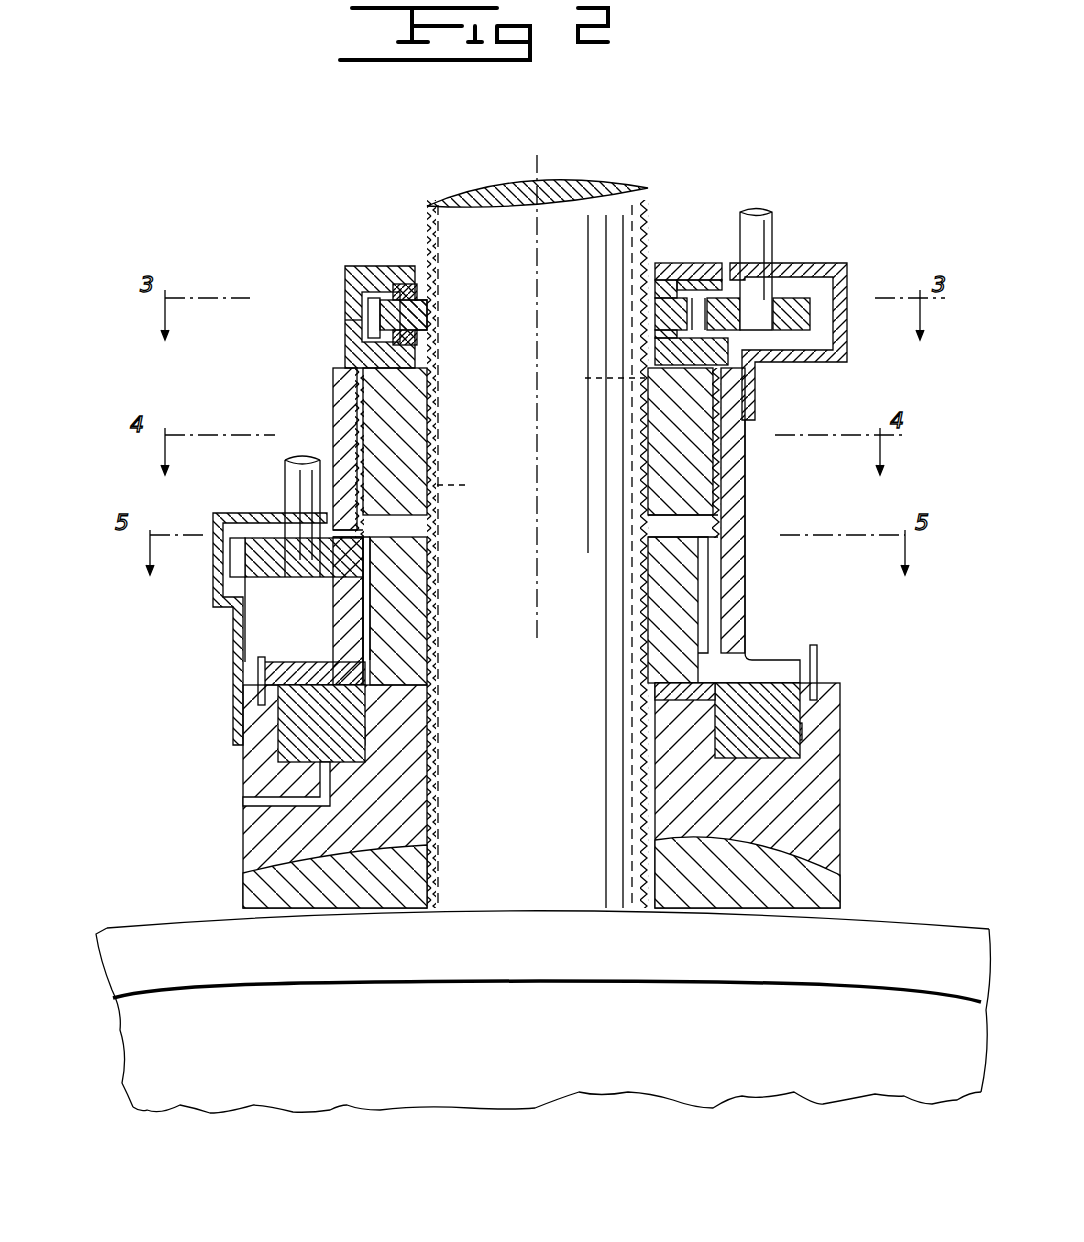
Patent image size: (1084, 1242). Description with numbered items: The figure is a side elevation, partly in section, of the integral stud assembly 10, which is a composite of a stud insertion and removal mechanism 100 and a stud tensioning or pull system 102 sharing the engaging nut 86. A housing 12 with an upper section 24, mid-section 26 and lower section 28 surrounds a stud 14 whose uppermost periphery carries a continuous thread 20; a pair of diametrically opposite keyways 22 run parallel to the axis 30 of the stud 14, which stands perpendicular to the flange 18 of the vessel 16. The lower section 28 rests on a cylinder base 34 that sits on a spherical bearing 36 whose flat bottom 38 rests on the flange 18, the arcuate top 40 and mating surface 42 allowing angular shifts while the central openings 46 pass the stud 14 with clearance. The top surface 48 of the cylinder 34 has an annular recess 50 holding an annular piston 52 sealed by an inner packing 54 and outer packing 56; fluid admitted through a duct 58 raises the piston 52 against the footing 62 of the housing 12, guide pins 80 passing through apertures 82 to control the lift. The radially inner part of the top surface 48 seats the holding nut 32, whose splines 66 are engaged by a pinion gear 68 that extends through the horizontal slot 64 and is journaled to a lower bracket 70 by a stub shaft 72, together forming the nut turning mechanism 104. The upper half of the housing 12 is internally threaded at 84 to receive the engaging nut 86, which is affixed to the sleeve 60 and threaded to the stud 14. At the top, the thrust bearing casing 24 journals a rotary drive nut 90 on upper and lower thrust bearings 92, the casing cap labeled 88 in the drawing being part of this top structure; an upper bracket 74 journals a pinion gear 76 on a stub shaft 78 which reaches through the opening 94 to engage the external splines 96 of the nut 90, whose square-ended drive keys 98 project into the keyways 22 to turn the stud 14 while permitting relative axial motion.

The integral stud assembly 10 is at (312, 203).
The housing 12 is at (333, 380).
The stud 14 is at (540, 773).
The vessel 16 is at (107, 927).
The vessel flange 18 is at (208, 968).
The thread 20 is at (635, 788).
The keyways 22 is at (541, 431).
The upper section / thrust bearing casing 24 is at (345, 320).
The mid-section 26 is at (752, 432).
The lower section 28 is at (748, 572).
The axis 30 is at (537, 572).
The holding nut 32 is at (650, 615).
The cylinder base 34 is at (845, 790).
The spherical bearing 36 is at (845, 888).
The flat bottom 38 is at (690, 910).
The arcuate top 40 is at (780, 845).
The mating surface 42 is at (665, 850).
The central opening 46 is at (430, 838).
The top surface 48 is at (430, 682).
The annular recess 50 is at (715, 700).
The annular piston 52 is at (840, 700).
The inner packing 54 is at (365, 708).
The outer packing 56 is at (280, 752).
The duct 58 is at (255, 802).
The sleeve 60 is at (748, 512).
The footing 62 is at (845, 660).
The horizontal slot 64 is at (330, 583).
The splines 66 is at (427, 562).
The pinion gear 68 is at (250, 535).
The lower bracket 70 is at (213, 596).
The stub shaft 72 is at (308, 455).
The upper bracket 74 is at (848, 355).
The pinion gear 76 is at (847, 280).
The stub shaft 78 is at (768, 210).
The guide pins 80 is at (255, 662).
The apertures 82 is at (255, 680).
The internal threads 84 is at (757, 385).
The engaging nut 86 is at (655, 445).
The nut 88 is at (345, 268).
The rotary drive nut 90 is at (432, 320).
The thrust bearings 92 is at (427, 292).
The opening 94 is at (708, 290).
The external splines 96 is at (375, 300).
The drive keys 98 is at (640, 323).
The stud insertion and removal mechanism 100 is at (808, 232).
The stud tensioning system 102 is at (748, 472).
The nut turning mechanism 104 is at (290, 448).